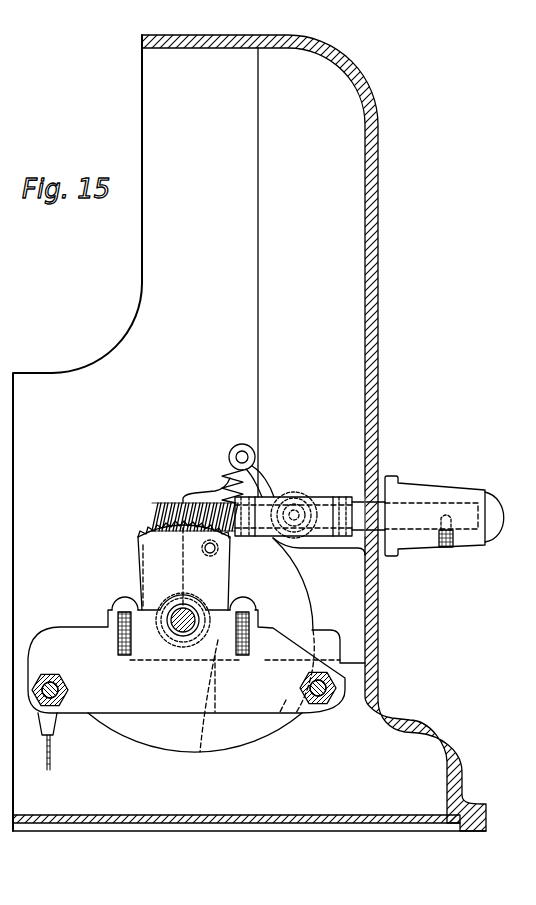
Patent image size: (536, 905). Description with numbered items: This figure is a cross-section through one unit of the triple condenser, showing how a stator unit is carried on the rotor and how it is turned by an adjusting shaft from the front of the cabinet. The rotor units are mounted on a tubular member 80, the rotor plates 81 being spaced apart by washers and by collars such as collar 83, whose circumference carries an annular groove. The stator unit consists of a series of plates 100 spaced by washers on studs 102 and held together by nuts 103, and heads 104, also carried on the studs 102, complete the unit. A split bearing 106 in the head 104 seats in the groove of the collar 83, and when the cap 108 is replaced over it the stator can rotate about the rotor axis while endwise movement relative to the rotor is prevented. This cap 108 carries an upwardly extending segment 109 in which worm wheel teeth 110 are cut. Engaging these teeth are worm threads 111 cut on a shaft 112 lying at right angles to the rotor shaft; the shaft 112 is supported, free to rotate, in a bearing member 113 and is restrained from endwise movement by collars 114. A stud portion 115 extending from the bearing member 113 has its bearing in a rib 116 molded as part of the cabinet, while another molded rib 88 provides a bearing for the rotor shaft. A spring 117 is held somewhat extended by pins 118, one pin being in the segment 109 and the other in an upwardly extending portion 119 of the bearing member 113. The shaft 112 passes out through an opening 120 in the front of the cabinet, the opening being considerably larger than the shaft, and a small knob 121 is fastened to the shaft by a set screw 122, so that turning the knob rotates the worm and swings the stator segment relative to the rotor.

The rib 88 is at (142, 386).
The rib 116 is at (257, 396).
The stud portion 115 is at (300, 503).
The collar 114 is at (346, 498).
The shaft 112 is at (410, 502).
The knob 121 is at (450, 489).
The set screw 122 is at (448, 548).
The opening 120 is at (372, 538).
The pin 118 is at (240, 444).
The upwardly extending portion 119 is at (262, 470).
The spring 117 is at (228, 482).
The worm threads 111 is at (158, 503).
The worm wheel teeth 110 is at (138, 537).
The collar 83 is at (191, 607).
The tubular member 80 is at (160, 612).
The cap 108 is at (259, 614).
The split bearing 106 is at (163, 637).
The segment 109 is at (229, 578).
The bearing member 113 is at (318, 538).
The rotor plate 81 is at (313, 592).
The plate 100 is at (148, 743).
The nut 103 is at (66, 688).
The stud 102 is at (66, 694).
The head 104 is at (306, 714).